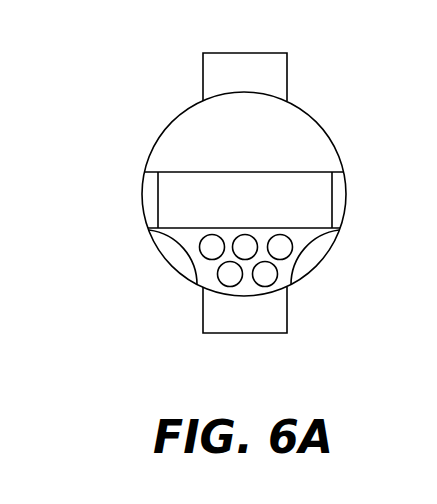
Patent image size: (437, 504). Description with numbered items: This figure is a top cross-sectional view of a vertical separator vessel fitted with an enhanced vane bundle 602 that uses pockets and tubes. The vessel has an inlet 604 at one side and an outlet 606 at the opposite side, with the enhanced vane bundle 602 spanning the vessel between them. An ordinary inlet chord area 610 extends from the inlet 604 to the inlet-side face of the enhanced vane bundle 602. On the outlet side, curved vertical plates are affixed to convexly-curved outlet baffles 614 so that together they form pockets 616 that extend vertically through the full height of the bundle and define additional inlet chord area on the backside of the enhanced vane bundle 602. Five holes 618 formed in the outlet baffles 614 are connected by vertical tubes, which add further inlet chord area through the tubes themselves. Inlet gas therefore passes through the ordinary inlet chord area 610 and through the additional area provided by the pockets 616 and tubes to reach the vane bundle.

The enhanced vane bundle 602 is at (172, 192).
The inlet 604 is at (287, 72).
The outlet 606 is at (203, 310).
The ordinary inlet chord area 610 is at (200, 145).
The outlet baffle 614 is at (212, 266).
The pocket 616 is at (315, 256).
The hole 618 is at (266, 276).